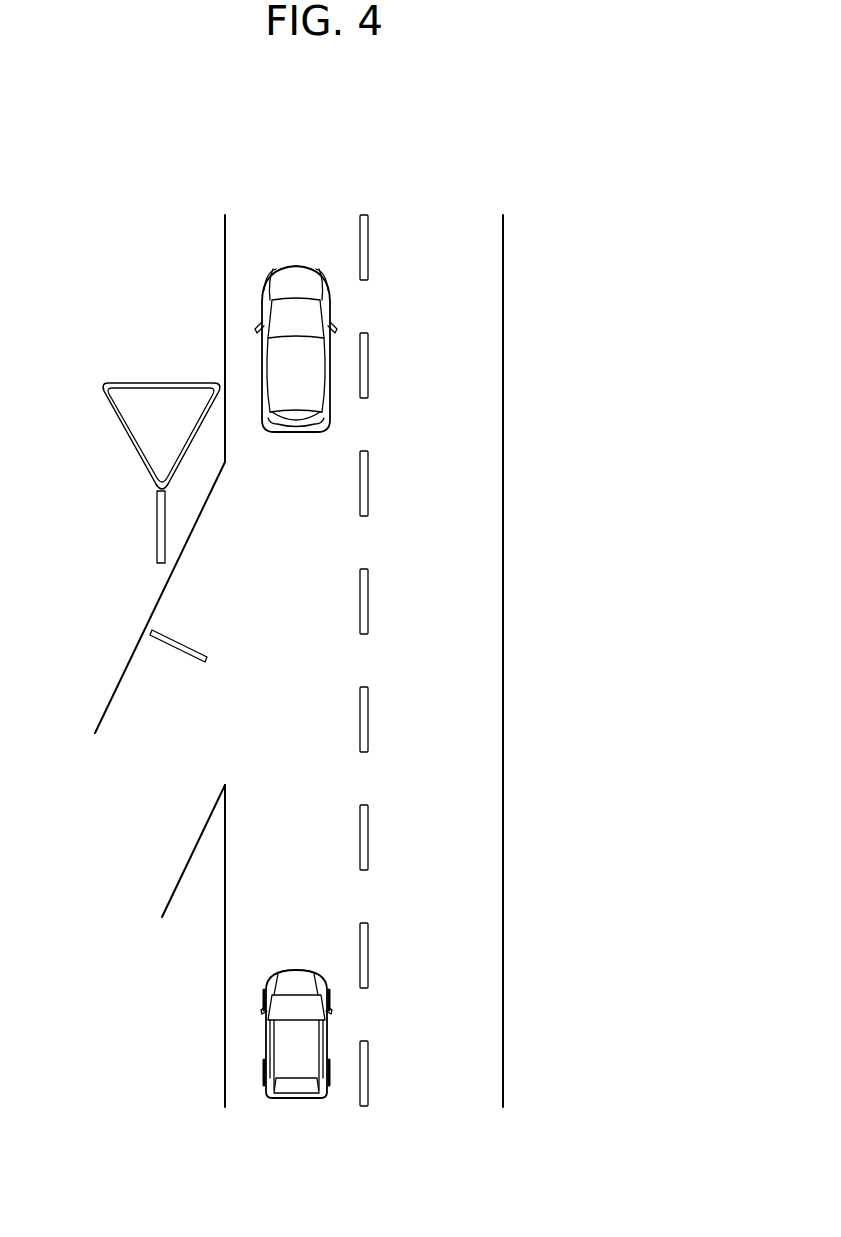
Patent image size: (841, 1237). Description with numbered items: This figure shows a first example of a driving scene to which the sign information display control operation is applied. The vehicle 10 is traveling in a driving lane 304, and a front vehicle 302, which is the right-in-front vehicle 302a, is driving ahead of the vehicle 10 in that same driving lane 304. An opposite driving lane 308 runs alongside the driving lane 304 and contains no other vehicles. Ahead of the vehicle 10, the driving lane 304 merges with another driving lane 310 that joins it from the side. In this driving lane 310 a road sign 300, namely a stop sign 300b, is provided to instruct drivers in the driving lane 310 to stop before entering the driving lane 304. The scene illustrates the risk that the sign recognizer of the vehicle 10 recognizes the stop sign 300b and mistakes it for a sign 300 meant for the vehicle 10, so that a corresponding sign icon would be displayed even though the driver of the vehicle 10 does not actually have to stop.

The vehicle 10 is at (302, 972).
The road sign 300 is at (123, 473).
The stop sign 300b is at (148, 447).
The front vehicle 302 is at (213, 349).
The right-in-front vehicle 302a is at (262, 301).
The driving lane 304 is at (306, 230).
The opposite driving lane 308 is at (416, 230).
The another driving lane 310 is at (120, 700).